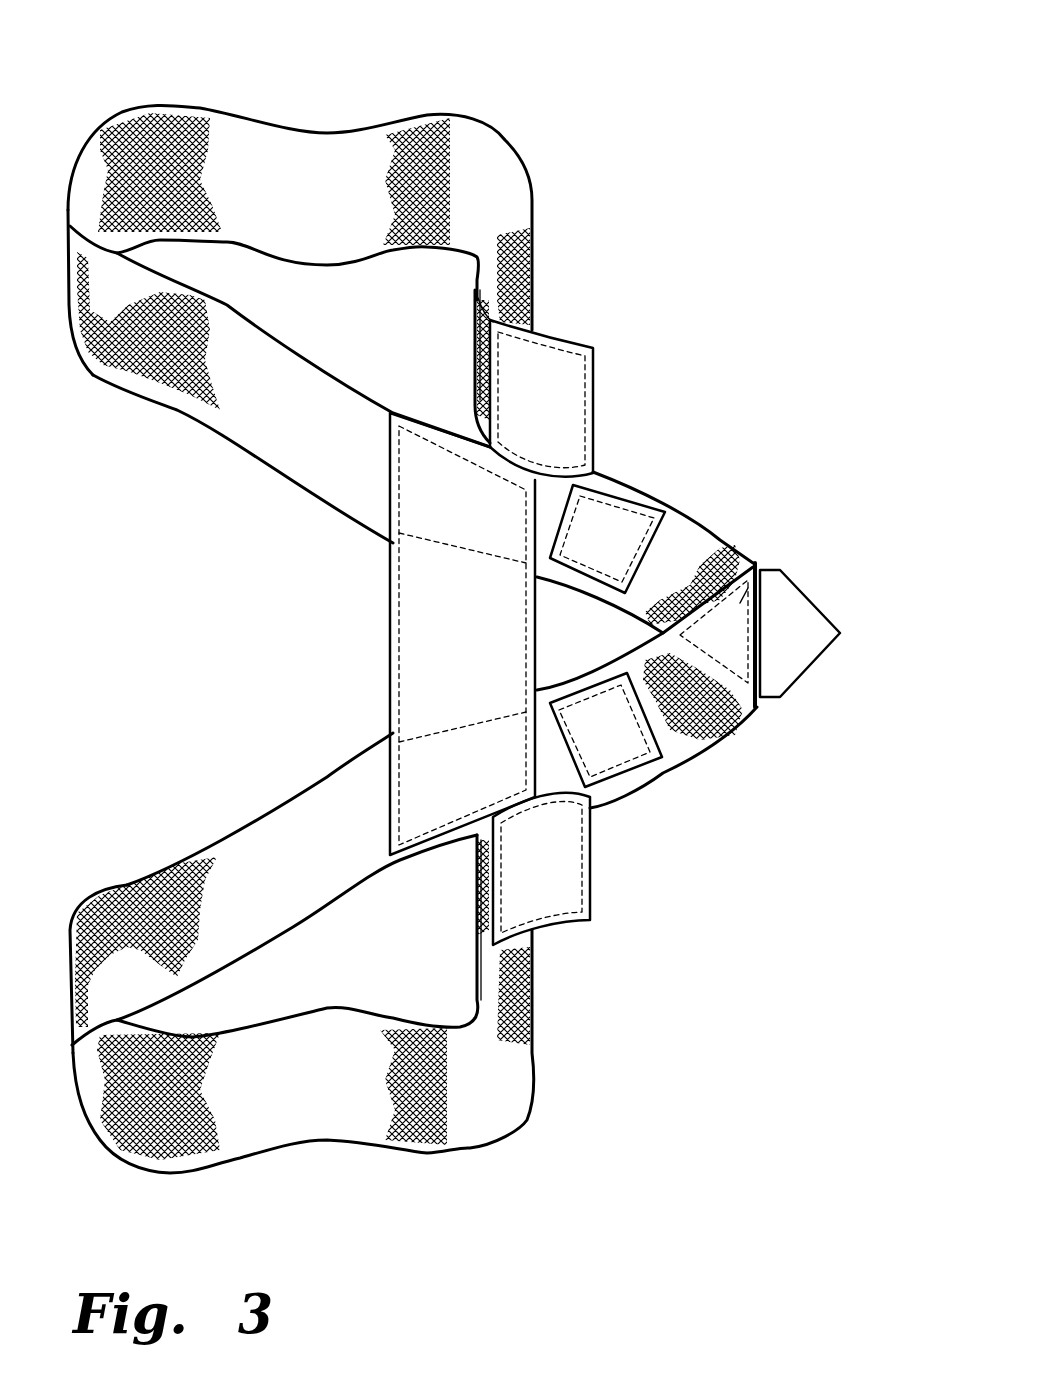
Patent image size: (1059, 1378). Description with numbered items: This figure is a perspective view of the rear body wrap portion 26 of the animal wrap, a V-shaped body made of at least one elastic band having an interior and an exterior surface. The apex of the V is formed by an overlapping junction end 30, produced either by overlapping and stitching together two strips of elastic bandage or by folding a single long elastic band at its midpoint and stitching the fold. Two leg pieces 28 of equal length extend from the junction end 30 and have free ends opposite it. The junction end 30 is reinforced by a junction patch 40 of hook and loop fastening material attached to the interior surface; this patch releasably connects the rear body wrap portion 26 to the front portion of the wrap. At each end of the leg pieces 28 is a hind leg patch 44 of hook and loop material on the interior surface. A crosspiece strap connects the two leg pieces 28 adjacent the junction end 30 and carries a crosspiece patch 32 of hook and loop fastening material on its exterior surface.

The rear body wrap portion 26 is at (613, 90).
The leg pieces 28 is at (262, 147).
The junction end 30 is at (757, 568).
The crosspiece patch 32 is at (417, 650).
The junction patch 40 is at (787, 657).
The hind leg patches 44 is at (543, 343).